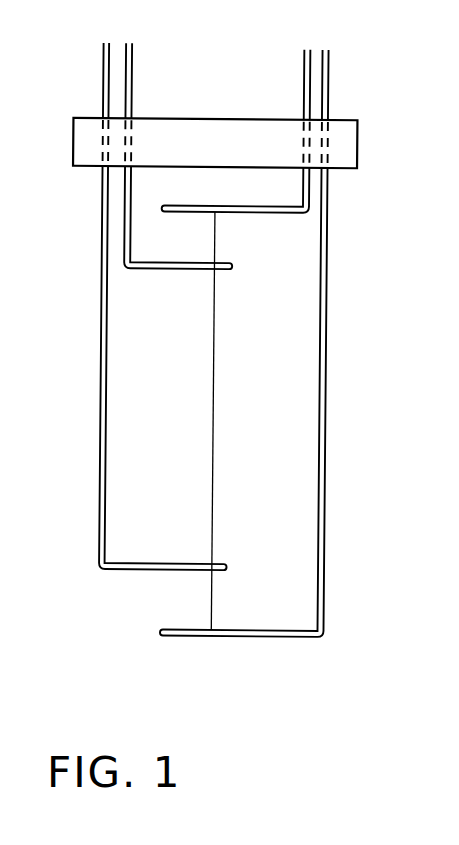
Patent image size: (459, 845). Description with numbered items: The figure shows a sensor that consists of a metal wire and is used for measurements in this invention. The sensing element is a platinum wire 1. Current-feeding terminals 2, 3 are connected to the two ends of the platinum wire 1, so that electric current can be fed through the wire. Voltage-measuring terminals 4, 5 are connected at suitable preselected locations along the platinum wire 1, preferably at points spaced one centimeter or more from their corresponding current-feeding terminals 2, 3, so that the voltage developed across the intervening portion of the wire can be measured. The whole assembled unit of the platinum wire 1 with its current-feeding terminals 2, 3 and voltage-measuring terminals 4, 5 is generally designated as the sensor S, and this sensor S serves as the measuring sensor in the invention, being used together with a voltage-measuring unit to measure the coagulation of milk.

The measuring sensor S is at (88, 529).
The platinum wire 1 is at (215, 386).
The current-feeding terminal 2 is at (302, 73).
The current-feeding terminal 3 is at (329, 73).
The voltage-measuring terminal 4 is at (103, 58).
The voltage-measuring terminal 5 is at (132, 66).